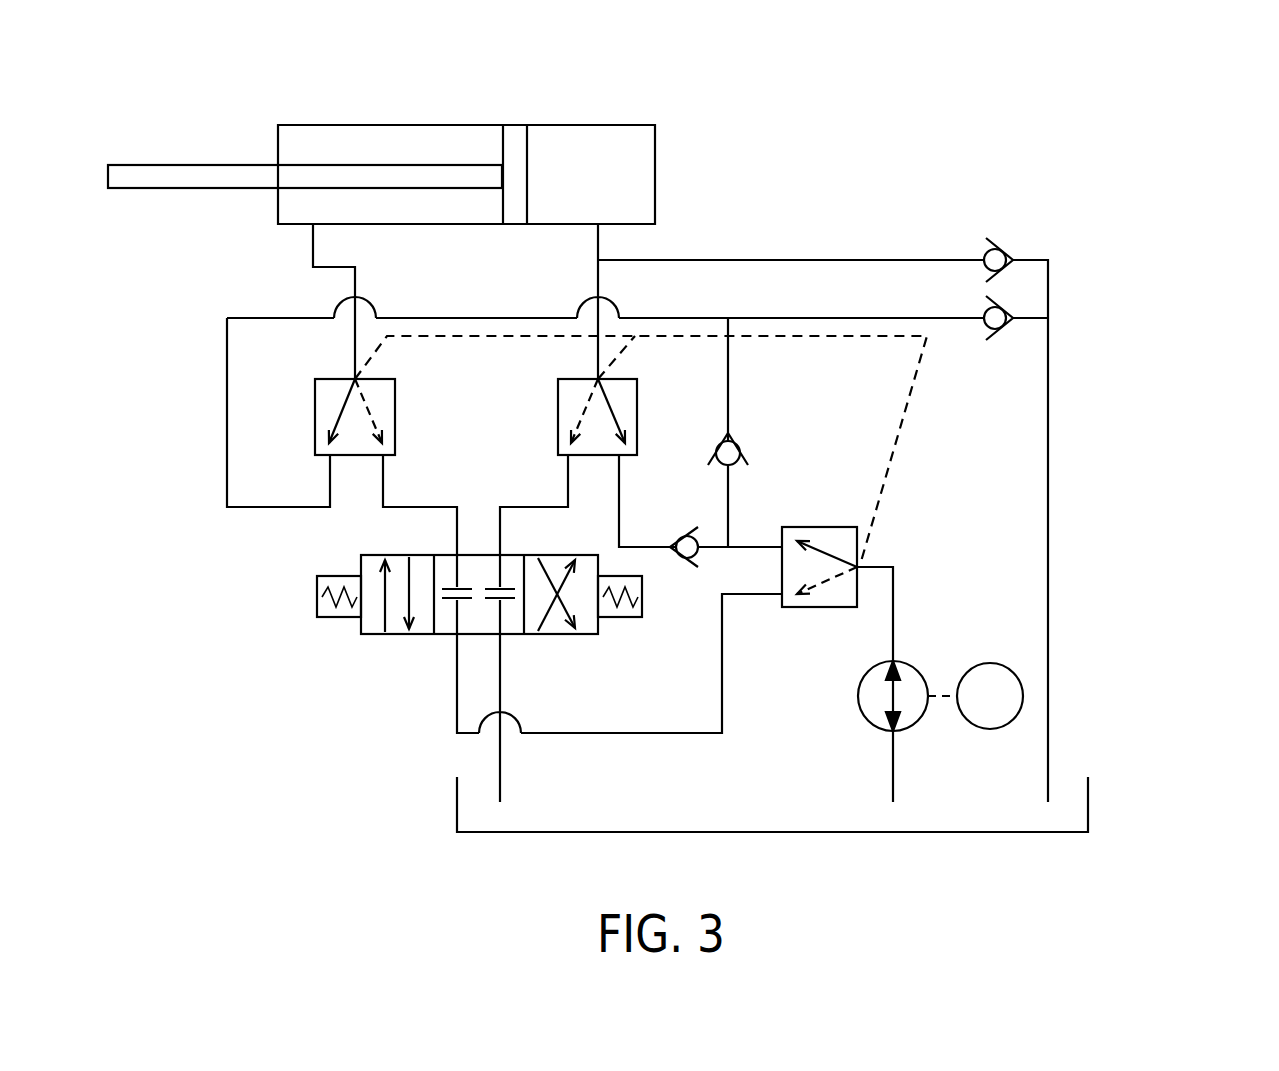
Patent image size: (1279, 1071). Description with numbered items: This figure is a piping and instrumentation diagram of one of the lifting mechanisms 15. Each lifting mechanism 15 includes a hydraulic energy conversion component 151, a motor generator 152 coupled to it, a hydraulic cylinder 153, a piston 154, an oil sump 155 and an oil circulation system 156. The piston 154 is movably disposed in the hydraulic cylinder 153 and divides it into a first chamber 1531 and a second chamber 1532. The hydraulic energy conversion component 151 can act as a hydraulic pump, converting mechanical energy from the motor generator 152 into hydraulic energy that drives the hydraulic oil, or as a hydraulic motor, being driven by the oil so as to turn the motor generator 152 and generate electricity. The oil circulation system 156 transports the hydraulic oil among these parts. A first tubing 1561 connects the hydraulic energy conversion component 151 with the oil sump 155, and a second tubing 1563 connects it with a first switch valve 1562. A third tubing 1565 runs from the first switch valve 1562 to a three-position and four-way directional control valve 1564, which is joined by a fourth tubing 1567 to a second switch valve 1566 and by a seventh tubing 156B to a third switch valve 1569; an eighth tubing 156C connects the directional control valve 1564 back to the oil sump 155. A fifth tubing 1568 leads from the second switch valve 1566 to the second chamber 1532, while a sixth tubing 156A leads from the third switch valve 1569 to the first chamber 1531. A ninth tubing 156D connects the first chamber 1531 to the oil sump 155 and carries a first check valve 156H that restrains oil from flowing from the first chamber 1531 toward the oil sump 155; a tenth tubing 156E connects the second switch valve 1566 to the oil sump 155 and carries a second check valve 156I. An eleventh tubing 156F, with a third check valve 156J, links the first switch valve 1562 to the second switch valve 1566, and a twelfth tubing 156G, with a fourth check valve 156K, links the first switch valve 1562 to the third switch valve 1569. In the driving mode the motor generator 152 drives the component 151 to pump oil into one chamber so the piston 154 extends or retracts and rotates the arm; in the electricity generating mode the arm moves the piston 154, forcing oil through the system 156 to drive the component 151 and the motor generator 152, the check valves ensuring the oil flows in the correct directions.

The lifting mechanism 15 is at (1176, 128).
The hydraulic energy conversion component 151 is at (910, 663).
The motor generator 152 is at (997, 662).
The hydraulic cylinder 153 is at (472, 125).
The first chamber 1531 is at (603, 151).
The second chamber 1532 is at (344, 142).
The piston 154 is at (181, 172).
The oil sump 155 is at (1090, 800).
The oil circulation system 156 is at (915, 235).
The pump inlet line 1561 is at (895, 770).
The first switch valve 1562 is at (838, 502).
The second tubing 1563 is at (875, 565).
The three-position and four-way directional control valve 1564 is at (375, 636).
The third tubing 1565 is at (605, 733).
The second switch valve 1566 is at (397, 412).
The fourth tubing 1567 is at (457, 480).
The fifth tubing 1568 is at (313, 248).
The third switch valve 1569 is at (672, 392).
The sixth tubing 156A is at (598, 241).
The seventh tubing 156B is at (568, 477).
The eighth tubing 156C is at (537, 682).
The ninth tubing 156D is at (1033, 258).
The tenth tubing 156E is at (1033, 313).
The eleventh tubing 156F is at (729, 397).
The twelfth tubing 156G is at (653, 497).
The first check valve 156H is at (998, 245).
The second check valve 156I is at (997, 331).
The third check valve 156J is at (742, 448).
The fourth check valve 156K is at (692, 562).